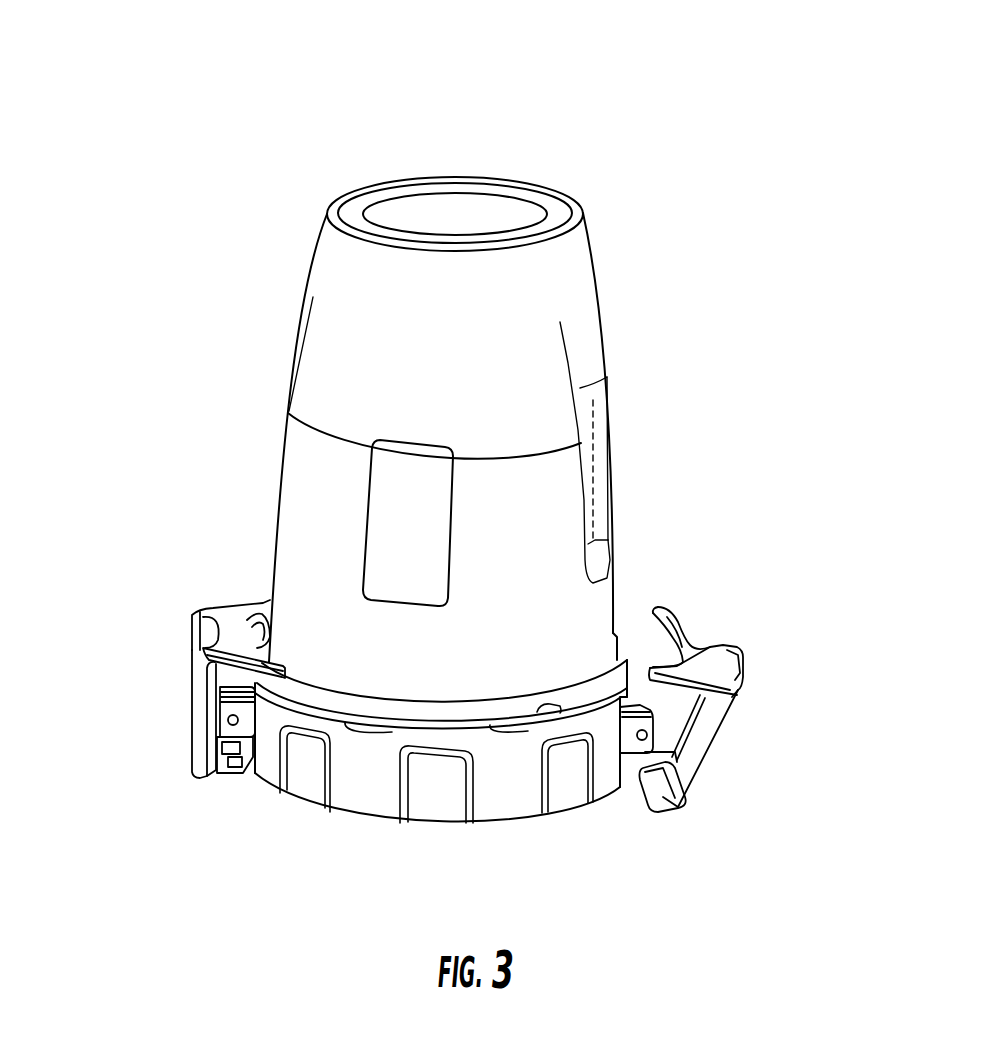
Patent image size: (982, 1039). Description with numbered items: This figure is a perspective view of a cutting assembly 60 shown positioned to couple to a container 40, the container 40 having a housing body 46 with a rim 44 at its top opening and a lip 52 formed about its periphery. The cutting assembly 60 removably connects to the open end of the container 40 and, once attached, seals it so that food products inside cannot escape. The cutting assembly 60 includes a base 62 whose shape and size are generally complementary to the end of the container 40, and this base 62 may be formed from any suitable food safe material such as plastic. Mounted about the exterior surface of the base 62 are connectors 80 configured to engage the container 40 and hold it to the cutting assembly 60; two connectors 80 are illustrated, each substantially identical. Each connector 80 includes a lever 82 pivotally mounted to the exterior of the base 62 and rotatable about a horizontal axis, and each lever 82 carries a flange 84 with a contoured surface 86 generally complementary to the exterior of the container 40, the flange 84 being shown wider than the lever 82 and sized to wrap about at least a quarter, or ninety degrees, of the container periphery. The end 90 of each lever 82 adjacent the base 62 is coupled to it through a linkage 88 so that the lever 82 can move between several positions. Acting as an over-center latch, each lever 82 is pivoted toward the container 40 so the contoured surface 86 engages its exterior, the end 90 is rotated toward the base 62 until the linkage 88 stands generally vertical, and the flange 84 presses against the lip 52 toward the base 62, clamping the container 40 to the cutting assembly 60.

The container 40 is at (266, 118).
The rim / top opening of housing 44 is at (487, 172).
The housing body 46 is at (335, 330).
The lip 52 is at (596, 700).
The cutting assembly 60 is at (309, 831).
The base 62 is at (505, 783).
The connector 80 is at (179, 693).
The lever 82 is at (200, 731).
The flange 84 is at (218, 623).
The contoured surface 86 is at (265, 607).
The linkage 88 is at (230, 745).
The end 90 is at (654, 785).